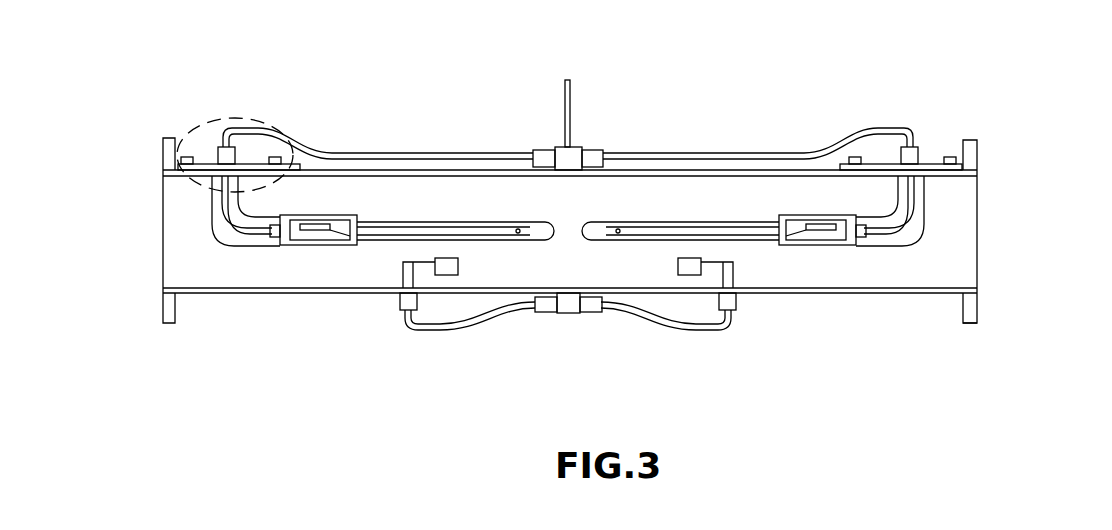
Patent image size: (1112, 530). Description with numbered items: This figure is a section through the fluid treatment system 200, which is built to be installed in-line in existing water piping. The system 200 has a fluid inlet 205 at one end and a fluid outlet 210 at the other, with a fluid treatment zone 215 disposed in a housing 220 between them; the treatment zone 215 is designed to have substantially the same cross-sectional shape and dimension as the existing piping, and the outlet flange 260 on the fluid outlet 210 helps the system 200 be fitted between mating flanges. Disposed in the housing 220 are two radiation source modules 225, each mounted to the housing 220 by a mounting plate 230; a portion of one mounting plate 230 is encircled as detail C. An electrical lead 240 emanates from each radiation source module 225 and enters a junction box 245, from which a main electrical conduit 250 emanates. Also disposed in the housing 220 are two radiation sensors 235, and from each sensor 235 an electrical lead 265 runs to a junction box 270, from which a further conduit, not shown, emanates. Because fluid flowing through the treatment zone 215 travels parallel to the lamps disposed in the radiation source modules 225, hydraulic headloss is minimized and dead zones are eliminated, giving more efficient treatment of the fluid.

The fluid treatment system 200 is at (568, 249).
The fluid inlet 205 is at (162, 210).
The fluid outlet 210 is at (975, 210).
The fluid treatment zone 215 is at (596, 203).
The housing 220 is at (335, 293).
The radiation source module 225 is at (252, 245).
The mounting plate 230 is at (200, 148).
The radiation sensor 235 is at (449, 275).
The electrical lead 240 is at (428, 152).
The junction box 245 is at (580, 147).
The main electrical conduit 250 is at (563, 97).
The outlet flange 260 is at (978, 317).
The electrical lead 265 is at (512, 313).
The lower center tee fitting 270 is at (571, 313).
The detail region C is at (245, 117).